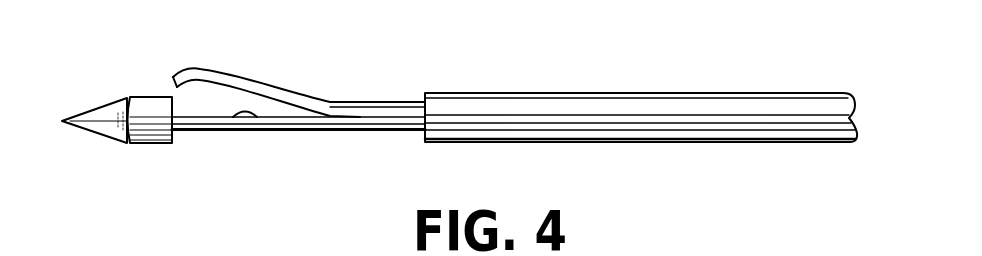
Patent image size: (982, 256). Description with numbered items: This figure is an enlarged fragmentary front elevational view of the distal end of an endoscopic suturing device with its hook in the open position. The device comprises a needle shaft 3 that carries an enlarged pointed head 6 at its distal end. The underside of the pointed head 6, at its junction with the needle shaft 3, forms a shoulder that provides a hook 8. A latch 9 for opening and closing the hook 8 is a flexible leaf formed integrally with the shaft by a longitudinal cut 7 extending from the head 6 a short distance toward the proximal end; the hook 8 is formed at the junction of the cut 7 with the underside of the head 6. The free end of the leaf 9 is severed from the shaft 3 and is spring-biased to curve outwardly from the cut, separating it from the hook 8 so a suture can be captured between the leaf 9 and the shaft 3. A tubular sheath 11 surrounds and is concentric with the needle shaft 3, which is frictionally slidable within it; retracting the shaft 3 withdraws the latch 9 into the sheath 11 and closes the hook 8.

The needle shaft 3 is at (390, 113).
The pointed head 6 is at (143, 145).
The longitudinal cut 7 is at (262, 128).
The hook 8 is at (174, 143).
The latch 9 is at (242, 82).
The tubular sheath 11 is at (522, 130).